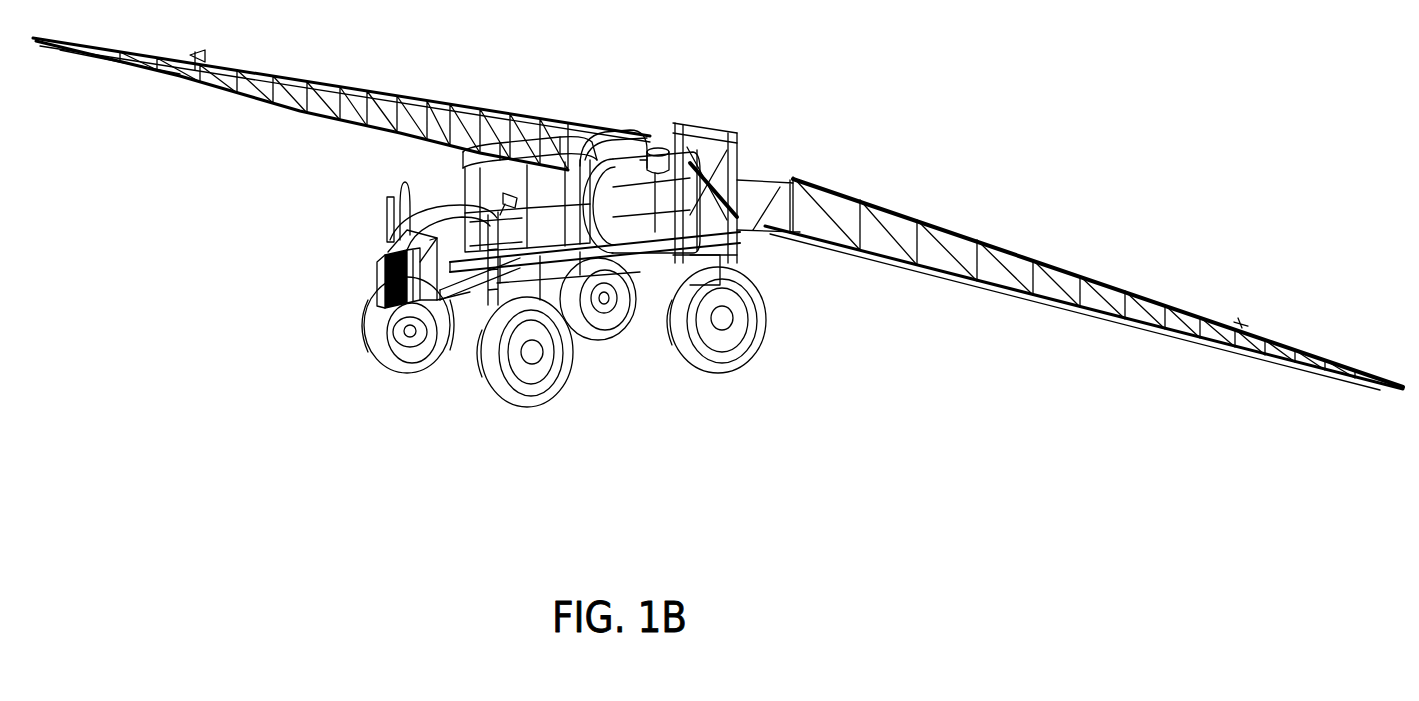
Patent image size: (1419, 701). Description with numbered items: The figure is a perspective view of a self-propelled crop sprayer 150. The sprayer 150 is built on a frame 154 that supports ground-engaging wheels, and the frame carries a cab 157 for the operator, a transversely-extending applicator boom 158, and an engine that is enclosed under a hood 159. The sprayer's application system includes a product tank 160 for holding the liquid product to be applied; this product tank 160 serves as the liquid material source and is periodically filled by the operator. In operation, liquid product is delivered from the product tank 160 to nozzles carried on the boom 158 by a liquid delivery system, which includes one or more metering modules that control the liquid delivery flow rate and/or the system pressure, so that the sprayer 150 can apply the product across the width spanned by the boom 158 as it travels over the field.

The self-propelled crop sprayer 150 is at (776, 103).
The frame 154 is at (447, 335).
The cab 157 is at (470, 156).
The applicator boom 158 is at (923, 210).
The hood 159 is at (380, 270).
The product tank 160 is at (655, 130).